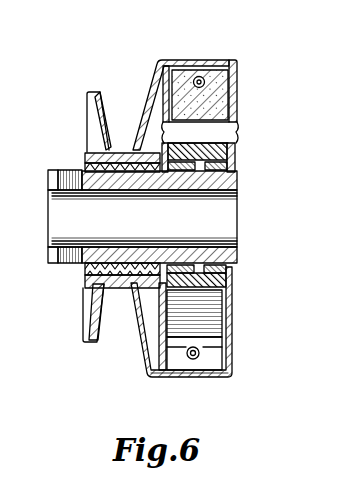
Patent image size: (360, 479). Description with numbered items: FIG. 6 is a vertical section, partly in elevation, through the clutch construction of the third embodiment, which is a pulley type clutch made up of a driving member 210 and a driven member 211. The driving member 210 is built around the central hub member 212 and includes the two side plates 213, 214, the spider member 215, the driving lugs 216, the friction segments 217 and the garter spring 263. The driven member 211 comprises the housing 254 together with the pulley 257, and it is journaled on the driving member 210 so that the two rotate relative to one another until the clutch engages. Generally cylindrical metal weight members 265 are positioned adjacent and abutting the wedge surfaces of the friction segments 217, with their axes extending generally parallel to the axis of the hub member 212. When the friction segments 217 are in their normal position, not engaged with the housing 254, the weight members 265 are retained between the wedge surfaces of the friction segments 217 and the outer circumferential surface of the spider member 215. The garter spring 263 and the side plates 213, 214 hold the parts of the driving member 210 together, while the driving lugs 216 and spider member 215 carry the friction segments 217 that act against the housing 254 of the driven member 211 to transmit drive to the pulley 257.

The driving member 210 is at (239, 112).
The driven member 211 is at (156, 62).
The hub member 212 is at (223, 218).
The side plate 213 is at (230, 327).
The side plate 214 is at (159, 337).
The spider member 215 is at (232, 283).
The driving lugs 216 is at (233, 133).
The friction segments 217 is at (222, 82).
The housing 254 is at (197, 378).
The pulley 257 is at (86, 103).
The garter spring 263 is at (198, 77).
The weight members 265 is at (203, 325).